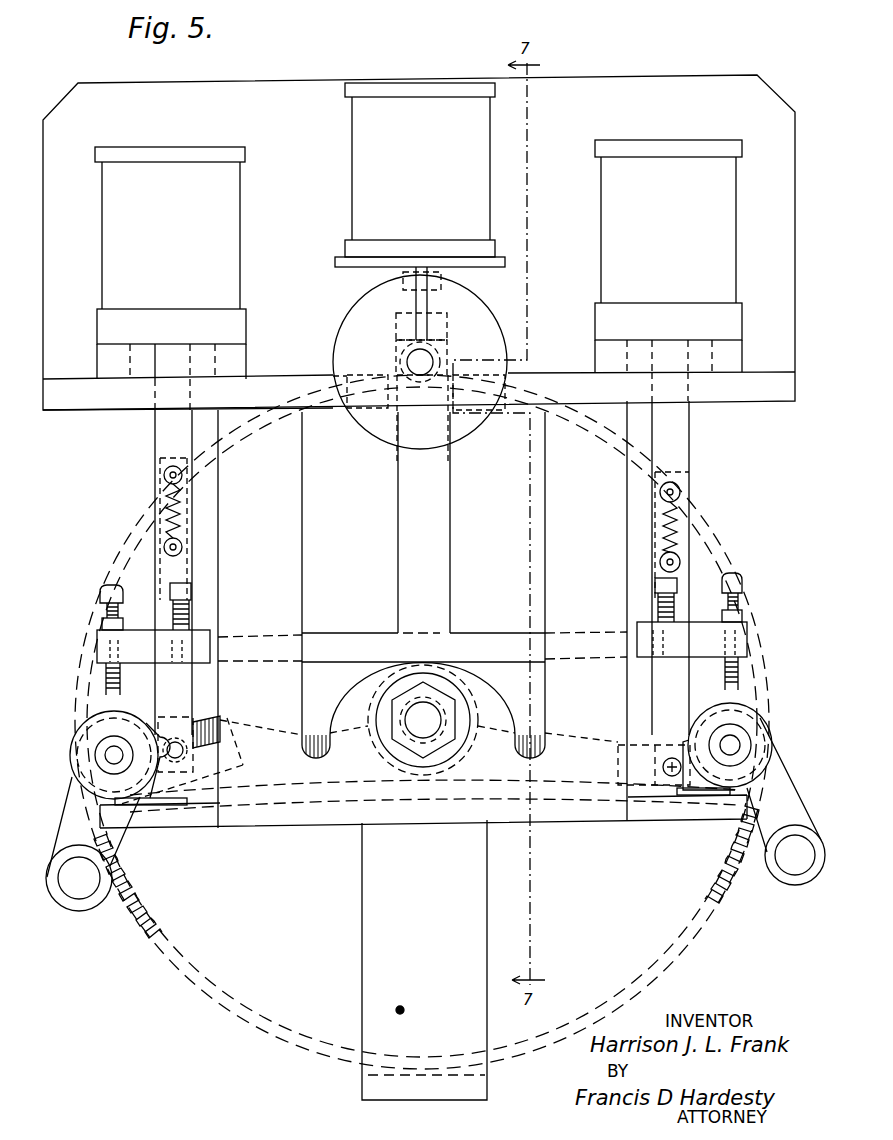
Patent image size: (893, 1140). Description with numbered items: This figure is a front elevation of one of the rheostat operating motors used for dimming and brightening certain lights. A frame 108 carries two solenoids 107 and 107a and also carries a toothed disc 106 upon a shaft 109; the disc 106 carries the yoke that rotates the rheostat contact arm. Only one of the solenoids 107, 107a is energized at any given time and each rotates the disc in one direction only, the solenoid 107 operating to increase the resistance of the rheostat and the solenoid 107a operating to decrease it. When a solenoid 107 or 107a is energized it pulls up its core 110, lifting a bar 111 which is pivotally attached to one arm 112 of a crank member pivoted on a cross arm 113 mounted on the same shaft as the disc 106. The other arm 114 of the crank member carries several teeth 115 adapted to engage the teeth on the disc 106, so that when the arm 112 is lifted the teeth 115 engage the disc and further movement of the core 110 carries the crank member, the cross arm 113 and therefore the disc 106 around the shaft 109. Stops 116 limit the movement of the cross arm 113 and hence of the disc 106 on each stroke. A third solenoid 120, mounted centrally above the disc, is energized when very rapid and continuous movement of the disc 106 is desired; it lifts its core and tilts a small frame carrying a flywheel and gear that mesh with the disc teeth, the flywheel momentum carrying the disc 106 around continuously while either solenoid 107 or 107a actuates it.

The toothed disc 106 is at (700, 922).
The solenoid 107 is at (668, 270).
The solenoid 107a is at (170, 278).
The frame 108 is at (446, 578).
The shaft 109 is at (423, 720).
The core 110 is at (183, 443).
The bar 111 is at (183, 573).
The arm of crank member 112 is at (226, 718).
The cross arm 113 is at (309, 733).
The arm of crank member 114 is at (773, 773).
The teeth 115 is at (752, 858).
The stops 116 is at (104, 586).
The third solenoid 120 is at (420, 175).